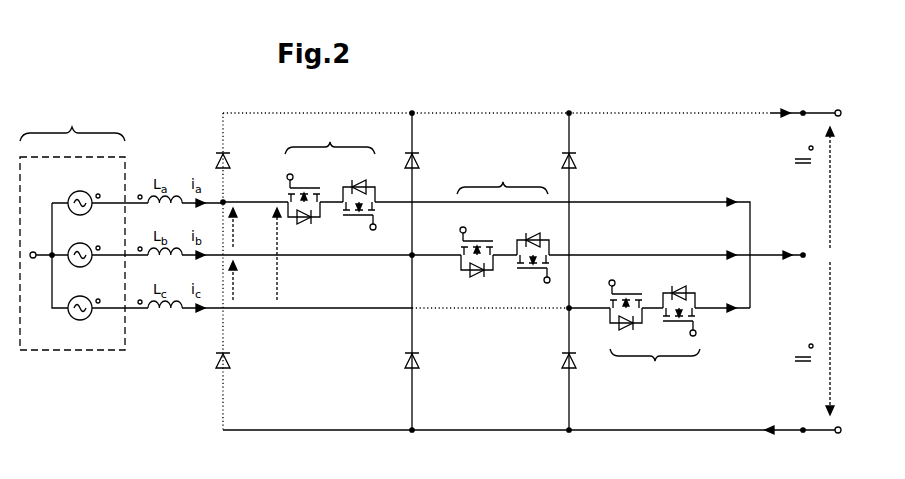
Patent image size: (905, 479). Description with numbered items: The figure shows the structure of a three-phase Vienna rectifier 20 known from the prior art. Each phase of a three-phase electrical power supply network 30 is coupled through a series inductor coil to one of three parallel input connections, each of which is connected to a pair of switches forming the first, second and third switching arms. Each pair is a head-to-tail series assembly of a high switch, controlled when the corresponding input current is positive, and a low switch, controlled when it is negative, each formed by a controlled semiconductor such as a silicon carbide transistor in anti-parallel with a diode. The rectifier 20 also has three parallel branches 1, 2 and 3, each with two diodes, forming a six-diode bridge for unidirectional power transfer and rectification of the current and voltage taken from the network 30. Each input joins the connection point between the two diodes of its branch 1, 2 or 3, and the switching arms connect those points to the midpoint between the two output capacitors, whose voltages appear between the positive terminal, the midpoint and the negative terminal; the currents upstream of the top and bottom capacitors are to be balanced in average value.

The first branch 1 is at (222, 127).
The second branch 2 is at (413, 131).
The third branch 3 is at (570, 131).
The three-phase Vienna rectifier 20 is at (152, 375).
The three-phase electrical power supply network 30 is at (105, 126).